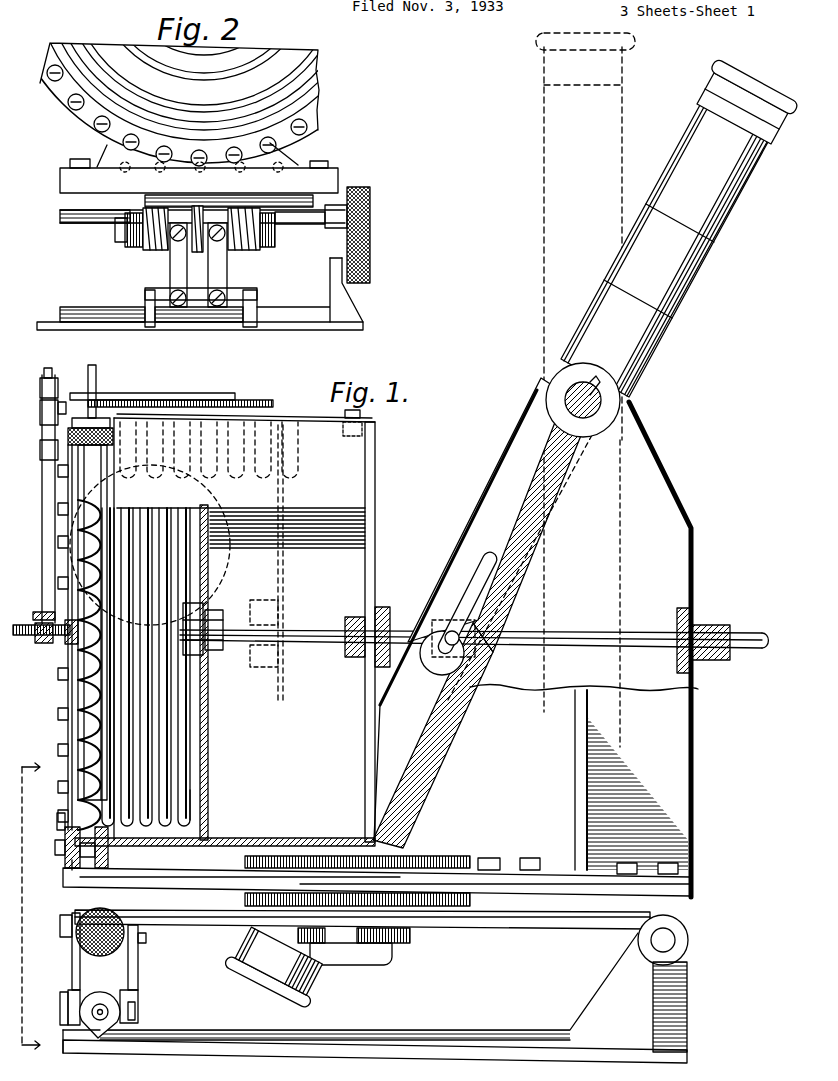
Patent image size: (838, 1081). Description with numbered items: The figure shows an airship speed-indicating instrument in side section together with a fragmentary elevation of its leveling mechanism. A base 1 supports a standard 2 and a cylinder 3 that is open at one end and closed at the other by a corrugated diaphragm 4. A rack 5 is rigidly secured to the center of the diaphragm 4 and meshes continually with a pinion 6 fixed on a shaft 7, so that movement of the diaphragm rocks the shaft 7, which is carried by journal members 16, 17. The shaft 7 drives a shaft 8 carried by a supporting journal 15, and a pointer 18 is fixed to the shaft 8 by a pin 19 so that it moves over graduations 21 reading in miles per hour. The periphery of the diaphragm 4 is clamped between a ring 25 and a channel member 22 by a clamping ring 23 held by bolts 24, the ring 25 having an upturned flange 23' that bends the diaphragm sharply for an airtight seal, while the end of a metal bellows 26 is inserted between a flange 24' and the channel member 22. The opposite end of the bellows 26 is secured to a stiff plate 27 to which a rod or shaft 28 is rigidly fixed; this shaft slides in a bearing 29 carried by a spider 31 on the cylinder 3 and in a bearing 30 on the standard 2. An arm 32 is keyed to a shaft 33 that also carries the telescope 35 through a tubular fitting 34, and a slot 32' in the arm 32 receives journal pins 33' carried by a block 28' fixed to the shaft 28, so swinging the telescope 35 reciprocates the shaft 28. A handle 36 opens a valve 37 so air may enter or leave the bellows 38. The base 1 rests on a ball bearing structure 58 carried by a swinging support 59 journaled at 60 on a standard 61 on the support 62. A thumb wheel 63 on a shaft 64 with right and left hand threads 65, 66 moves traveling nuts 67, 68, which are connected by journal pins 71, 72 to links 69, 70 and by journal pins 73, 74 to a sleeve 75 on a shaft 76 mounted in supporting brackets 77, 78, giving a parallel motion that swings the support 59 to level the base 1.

In FIG. 2, the base 1 is at (60, 181).
In FIG. 1, the base 1 is at (690, 884).
In FIG. 1, the standard 2 is at (680, 813).
In FIG. 1, the cylinder 3 is at (185, 843).
In FIG. 2, the diaphragm 4 is at (100, 100).
In FIG. 1, the diaphragm 4 is at (66, 733).
In FIG. 1, the rack 5 is at (72, 640).
In FIG. 1, the pinion 6 is at (30, 636).
In FIG. 1, the shaft 7 is at (42, 543).
In FIG. 1, the shaft 8 is at (45, 365).
In FIG. 1, the supporting journal 15 is at (40, 412).
In FIG. 1, the journal member 16 is at (40, 450).
In FIG. 1, the journal member 17 is at (38, 612).
In FIG. 1, the pointer 18 is at (168, 393).
In FIG. 1, the pin 19 is at (40, 386).
In FIG. 1, the graduations 21 is at (255, 400).
In FIG. 1, the channel member 22 is at (72, 868).
In FIG. 2, the clamping ring 23 is at (206, 81).
In FIG. 1, the clamping ring 23 is at (61, 863).
In FIG. 1, the upturned flange 23' is at (47, 829).
In FIG. 2, the bolts 24 is at (173, 115).
In FIG. 1, the bolts 24 is at (55, 847).
In FIG. 1, the flange 24' is at (109, 864).
In FIG. 1, the ring 25 is at (95, 830).
In FIG. 1, the bellows 26 is at (170, 707).
In FIG. 1, the plate 27 is at (205, 782).
In FIG. 1, the rod or shaft 28 is at (474, 635).
In FIG. 1, the block 28' is at (445, 615).
In FIG. 1, the bearing 29 is at (385, 620).
In FIG. 1, the bearing 30 is at (705, 625).
In FIG. 1, the spider 31 is at (375, 550).
In FIG. 1, the arm 32 is at (482, 613).
In FIG. 1, the slot 32' is at (467, 589).
In FIG. 1, the shaft 33 is at (618, 397).
In FIG. 1, the journal pins 33' is at (480, 641).
In FIG. 1, the tubular fitting 34 is at (548, 390).
In FIG. 1, the telescope 35 is at (690, 282).
In FIG. 1, the handle 36 is at (96, 386).
In FIG. 1, the valve 37 is at (79, 424).
In FIG. 1, the bellows 38 is at (76, 697).
In FIG. 2, the ball bearing structure 58 is at (280, 206).
In FIG. 1, the ball bearing structure 58 is at (450, 914).
In FIG. 2, the swinging support 59 is at (60, 215).
In FIG. 1, the swinging support 59 is at (572, 929).
In FIG. 1, the journal 60 is at (678, 940).
In FIG. 1, the standard 61 is at (687, 1000).
In FIG. 2, the support 62 is at (158, 326).
In FIG. 1, the support 62 is at (420, 1055).
In FIG. 2, the thumb wheel 63 is at (370, 268).
In FIG. 1, the thumb wheel 63 is at (103, 956).
In FIG. 2, the shaft 64 is at (295, 232).
In FIG. 2, the right hand thread 65 is at (236, 236).
In FIG. 2, the left hand thread 66 is at (128, 240).
In FIG. 2, the traveling nut 67 is at (211, 215).
In FIG. 2, the traveling nut 68 is at (170, 220).
In FIG. 1, the link 69 is at (138, 975).
In FIG. 2, the link 70 is at (222, 265).
In FIG. 1, the link 70 is at (72, 965).
In FIG. 1, the journal pin 71 is at (146, 937).
In FIG. 1, the journal pin 72 is at (60, 930).
In FIG. 1, the journal pin 73 is at (135, 1012).
In FIG. 1, the journal pin 74 is at (68, 1010).
In FIG. 2, the sleeve 75 is at (233, 312).
In FIG. 2, the shaft 76 is at (257, 305).
In FIG. 1, the shaft 76 is at (100, 1004).
In FIG. 2, the supporting bracket 77 is at (255, 292).
In FIG. 1, the supporting bracket 77 is at (95, 1040).
In FIG. 2, the supporting bracket 78 is at (150, 293).